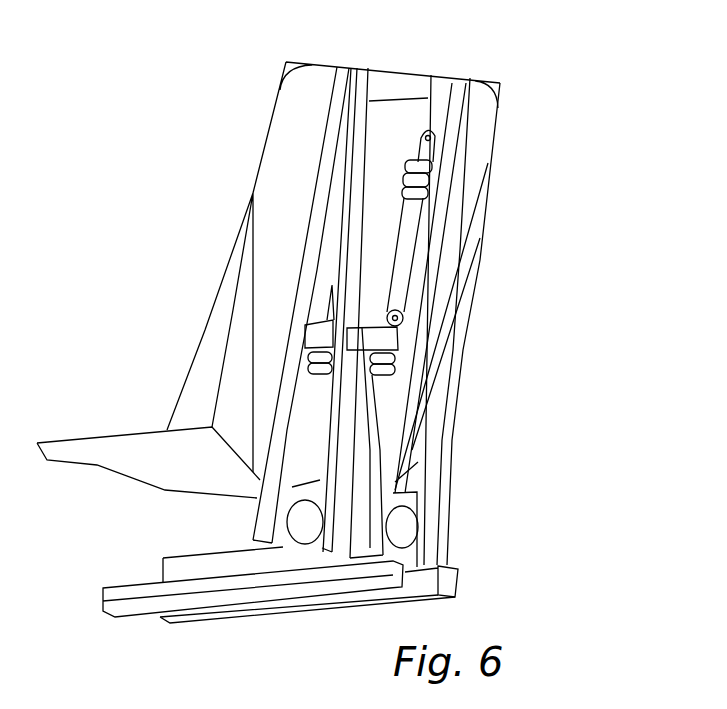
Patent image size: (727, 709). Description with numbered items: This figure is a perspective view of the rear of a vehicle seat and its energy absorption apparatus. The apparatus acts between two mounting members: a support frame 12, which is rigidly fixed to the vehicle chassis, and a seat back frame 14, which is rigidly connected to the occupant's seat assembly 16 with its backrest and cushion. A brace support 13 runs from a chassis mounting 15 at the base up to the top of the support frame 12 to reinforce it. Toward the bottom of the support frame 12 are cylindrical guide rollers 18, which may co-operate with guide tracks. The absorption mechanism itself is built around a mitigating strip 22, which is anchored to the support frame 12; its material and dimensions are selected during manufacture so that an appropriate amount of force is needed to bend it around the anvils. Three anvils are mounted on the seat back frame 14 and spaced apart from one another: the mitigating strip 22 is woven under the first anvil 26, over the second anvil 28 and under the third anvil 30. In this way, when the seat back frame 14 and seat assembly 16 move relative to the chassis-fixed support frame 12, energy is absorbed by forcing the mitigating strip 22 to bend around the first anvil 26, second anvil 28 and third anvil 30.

The support frame 12 is at (317, 207).
The brace support 13 is at (438, 502).
The seat back frame 14 is at (410, 138).
The chassis mounting 15 is at (138, 613).
The seat assembly 16 is at (197, 393).
The guide rollers 18 is at (390, 362).
The mitigating strip 22 is at (410, 240).
The first anvil 26 is at (430, 170).
The second anvil 28 is at (430, 178).
The third anvil 30 is at (358, 100).